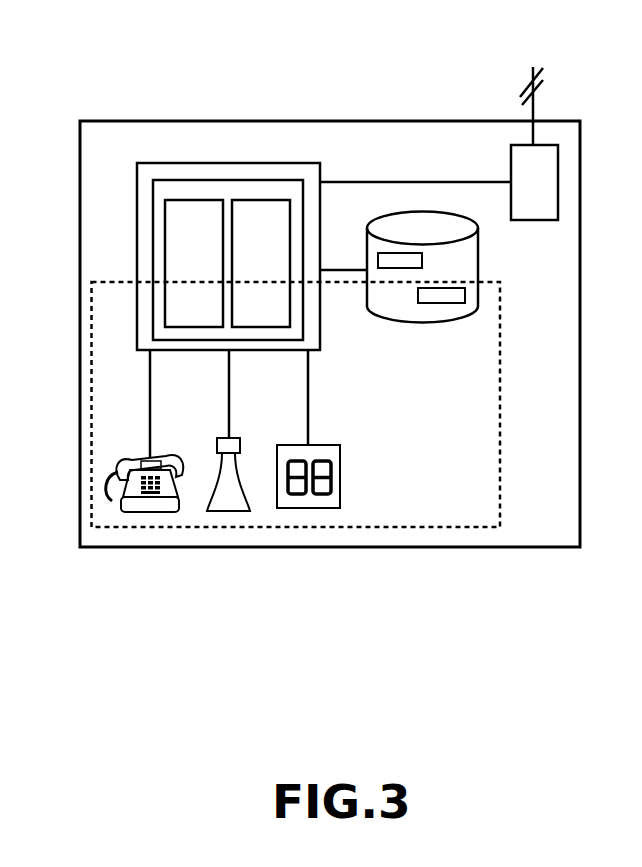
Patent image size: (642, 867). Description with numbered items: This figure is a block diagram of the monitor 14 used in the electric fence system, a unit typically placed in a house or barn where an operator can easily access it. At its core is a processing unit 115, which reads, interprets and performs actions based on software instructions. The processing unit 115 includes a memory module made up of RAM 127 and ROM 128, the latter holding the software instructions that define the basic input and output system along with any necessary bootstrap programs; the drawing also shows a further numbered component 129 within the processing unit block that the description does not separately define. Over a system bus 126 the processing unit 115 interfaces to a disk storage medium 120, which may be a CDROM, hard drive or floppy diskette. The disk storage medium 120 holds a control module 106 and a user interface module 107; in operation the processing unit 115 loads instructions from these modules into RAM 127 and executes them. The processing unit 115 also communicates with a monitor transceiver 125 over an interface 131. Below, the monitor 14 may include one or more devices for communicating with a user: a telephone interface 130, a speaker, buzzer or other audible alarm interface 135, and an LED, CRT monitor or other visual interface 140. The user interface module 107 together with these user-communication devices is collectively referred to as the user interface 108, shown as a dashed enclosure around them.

The monitor 14 is at (79, 55).
The user interface 108 is at (91, 408).
The processing unit 115 is at (176, 163).
The ROM 128 is at (165, 302).
The ROM 129 is at (223, 180).
The RAM 127 is at (270, 200).
The interface 131 is at (340, 190).
The system bus 126 is at (353, 262).
The monitor transceiver 125 is at (558, 157).
The disk storage medium 120 is at (450, 320).
The control module 106 is at (422, 262).
The user interface module 107 is at (465, 295).
The telephone interface 130 is at (148, 512).
The audible alarm interface 135 is at (227, 513).
The visual interface 140 is at (305, 508).